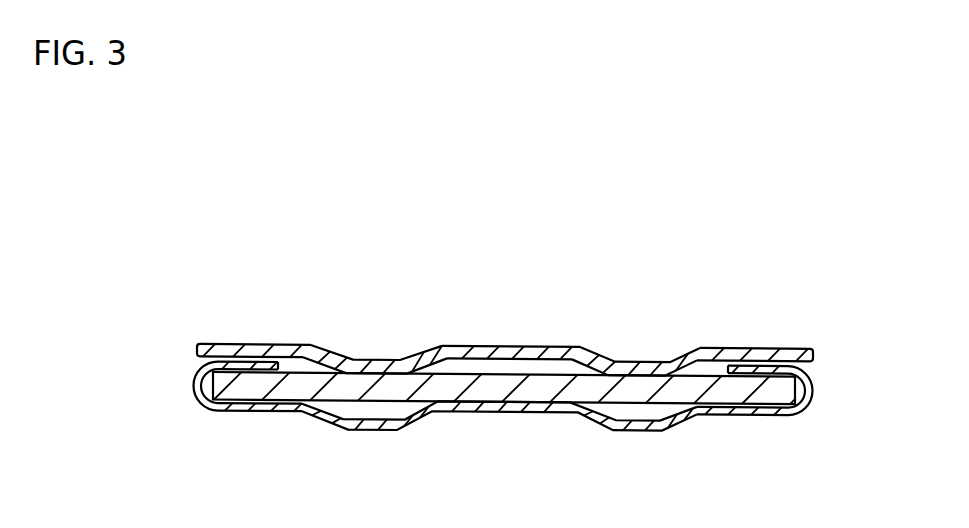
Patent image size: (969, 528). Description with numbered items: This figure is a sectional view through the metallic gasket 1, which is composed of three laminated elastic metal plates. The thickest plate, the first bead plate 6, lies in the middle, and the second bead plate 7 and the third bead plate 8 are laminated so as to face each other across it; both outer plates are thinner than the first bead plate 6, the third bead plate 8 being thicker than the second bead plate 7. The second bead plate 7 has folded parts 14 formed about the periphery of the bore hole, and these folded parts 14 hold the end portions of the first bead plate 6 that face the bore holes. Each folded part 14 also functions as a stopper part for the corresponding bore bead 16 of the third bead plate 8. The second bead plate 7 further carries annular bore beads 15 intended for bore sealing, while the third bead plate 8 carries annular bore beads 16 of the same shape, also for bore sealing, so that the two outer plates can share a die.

The metallic gasket 1 is at (612, 334).
The first bead plate 6 is at (768, 402).
The second bead plate 7 is at (723, 415).
The third bead plate 8 is at (818, 348).
The folded part 14 is at (245, 362).
The bore bead 15 is at (370, 428).
The bore bead 16 is at (377, 353).